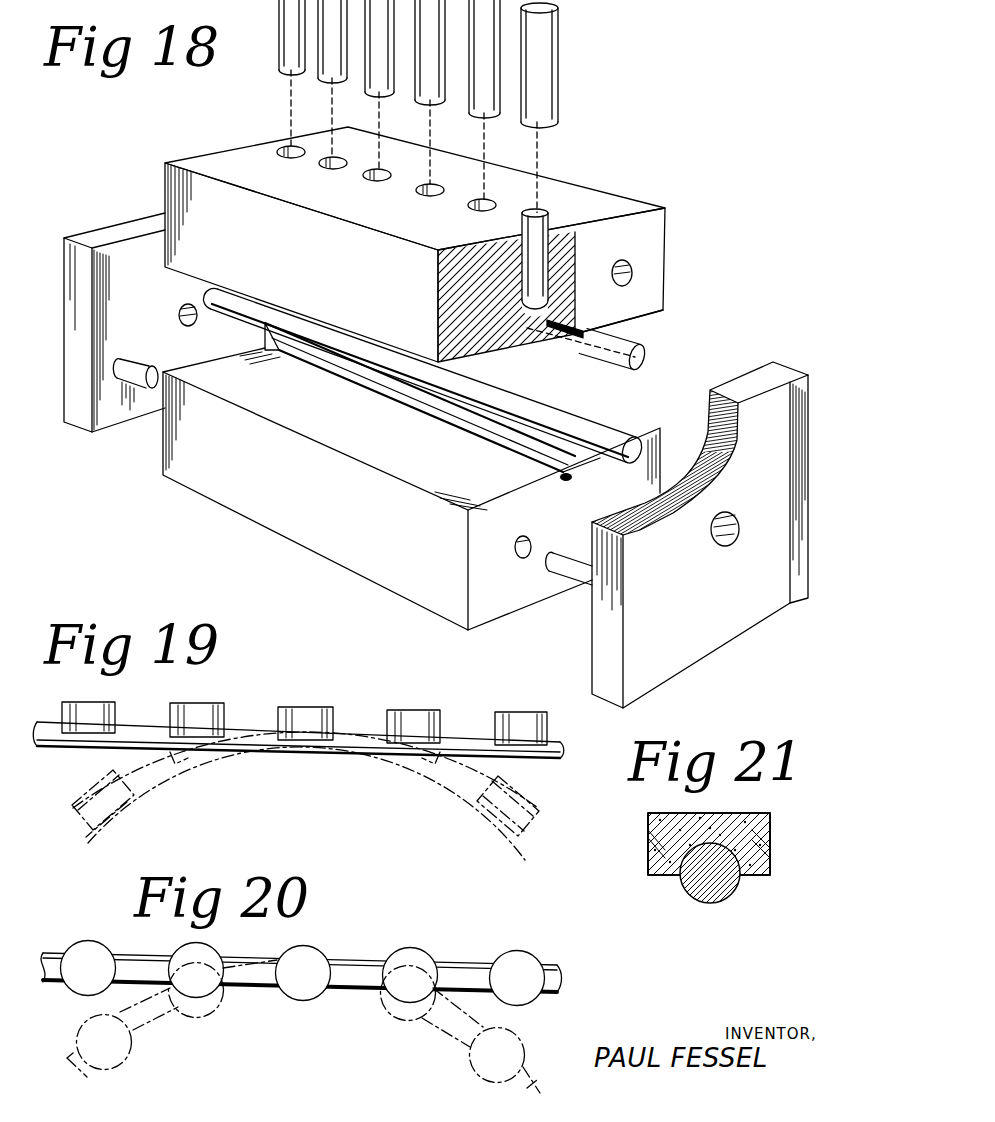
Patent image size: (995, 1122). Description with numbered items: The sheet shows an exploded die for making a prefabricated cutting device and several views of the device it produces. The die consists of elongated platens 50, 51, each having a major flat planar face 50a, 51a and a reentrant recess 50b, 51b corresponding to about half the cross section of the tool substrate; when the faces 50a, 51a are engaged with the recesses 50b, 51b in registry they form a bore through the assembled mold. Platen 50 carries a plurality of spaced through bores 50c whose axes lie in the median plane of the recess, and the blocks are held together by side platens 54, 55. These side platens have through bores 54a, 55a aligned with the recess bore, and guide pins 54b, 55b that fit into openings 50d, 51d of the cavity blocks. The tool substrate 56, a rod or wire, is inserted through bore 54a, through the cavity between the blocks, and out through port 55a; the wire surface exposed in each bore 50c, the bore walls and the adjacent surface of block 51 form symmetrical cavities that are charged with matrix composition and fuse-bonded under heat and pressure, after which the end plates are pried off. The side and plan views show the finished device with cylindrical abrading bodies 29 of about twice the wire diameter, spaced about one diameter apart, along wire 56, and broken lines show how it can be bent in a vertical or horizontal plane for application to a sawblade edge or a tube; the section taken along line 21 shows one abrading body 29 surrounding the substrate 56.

In FIG. 18, the platen 50 is at (670, 240).
In FIG. 18, the major flat planar face 50a is at (641, 322).
In FIG. 18, the reentrant recess 50b is at (568, 336).
In FIG. 18, the through bores 50c is at (283, 148).
In FIG. 18, the opening 50d is at (633, 276).
In FIG. 18, the platen 51 is at (366, 580).
In FIG. 18, the major flat planar face 51a is at (420, 448).
In FIG. 18, the reentrant recess 51b is at (572, 467).
In FIG. 18, the opening 51d is at (531, 540).
In FIG. 18, the side platen 54 is at (804, 354).
In FIG. 18, the through bore 54a is at (739, 530).
In FIG. 18, the guide pin 54b is at (566, 572).
In FIG. 18, the side platen 55 is at (103, 217).
In FIG. 18, the through bore 55a is at (195, 322).
In FIG. 18, the guide pin 55b is at (140, 382).
In FIG. 18, the tool substrate 56 is at (599, 437).
In FIG. 19, the tool substrate 56 is at (50, 748).
In FIG. 20, the tool substrate 56 is at (153, 1023).
In FIG. 21, the tool substrate 56 is at (728, 893).
In FIG. 21, the abrading body 29 is at (753, 815).
In FIG. 19, the section line 21 is at (305, 803).